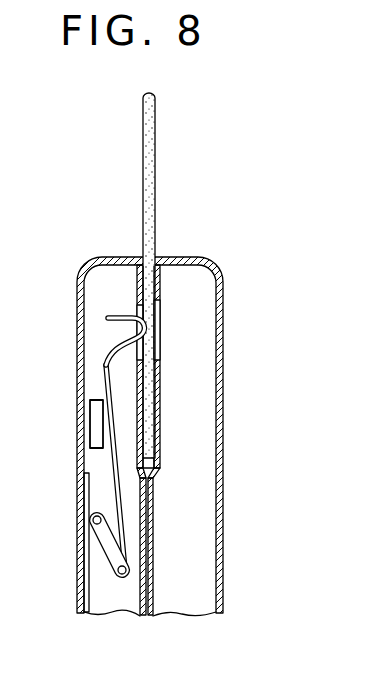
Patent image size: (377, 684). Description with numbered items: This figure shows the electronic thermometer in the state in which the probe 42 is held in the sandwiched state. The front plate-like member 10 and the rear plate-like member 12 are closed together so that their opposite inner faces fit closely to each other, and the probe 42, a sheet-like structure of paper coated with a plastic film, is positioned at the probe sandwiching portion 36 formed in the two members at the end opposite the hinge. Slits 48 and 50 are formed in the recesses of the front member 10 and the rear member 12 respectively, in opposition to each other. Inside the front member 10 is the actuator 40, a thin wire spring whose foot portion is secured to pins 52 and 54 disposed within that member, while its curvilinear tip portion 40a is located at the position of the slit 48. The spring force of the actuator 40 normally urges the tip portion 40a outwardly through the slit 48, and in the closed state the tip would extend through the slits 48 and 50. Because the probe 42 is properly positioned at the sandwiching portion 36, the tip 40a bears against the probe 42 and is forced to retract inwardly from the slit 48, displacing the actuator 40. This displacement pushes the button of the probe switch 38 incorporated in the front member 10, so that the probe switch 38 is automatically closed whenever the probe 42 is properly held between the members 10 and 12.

The front plate-like member 10 is at (77, 588).
The rear plate-like member 12 is at (222, 397).
The probe sandwiching portion 36 is at (142, 256).
The probe switch 38 is at (96, 420).
The actuator 40 is at (115, 449).
The curvilinear tip portion 40a is at (136, 340).
The probe 42 is at (158, 167).
The slit 48 is at (140, 311).
The slit 50 is at (160, 330).
The pin 52 is at (93, 522).
The pin 54 is at (122, 575).